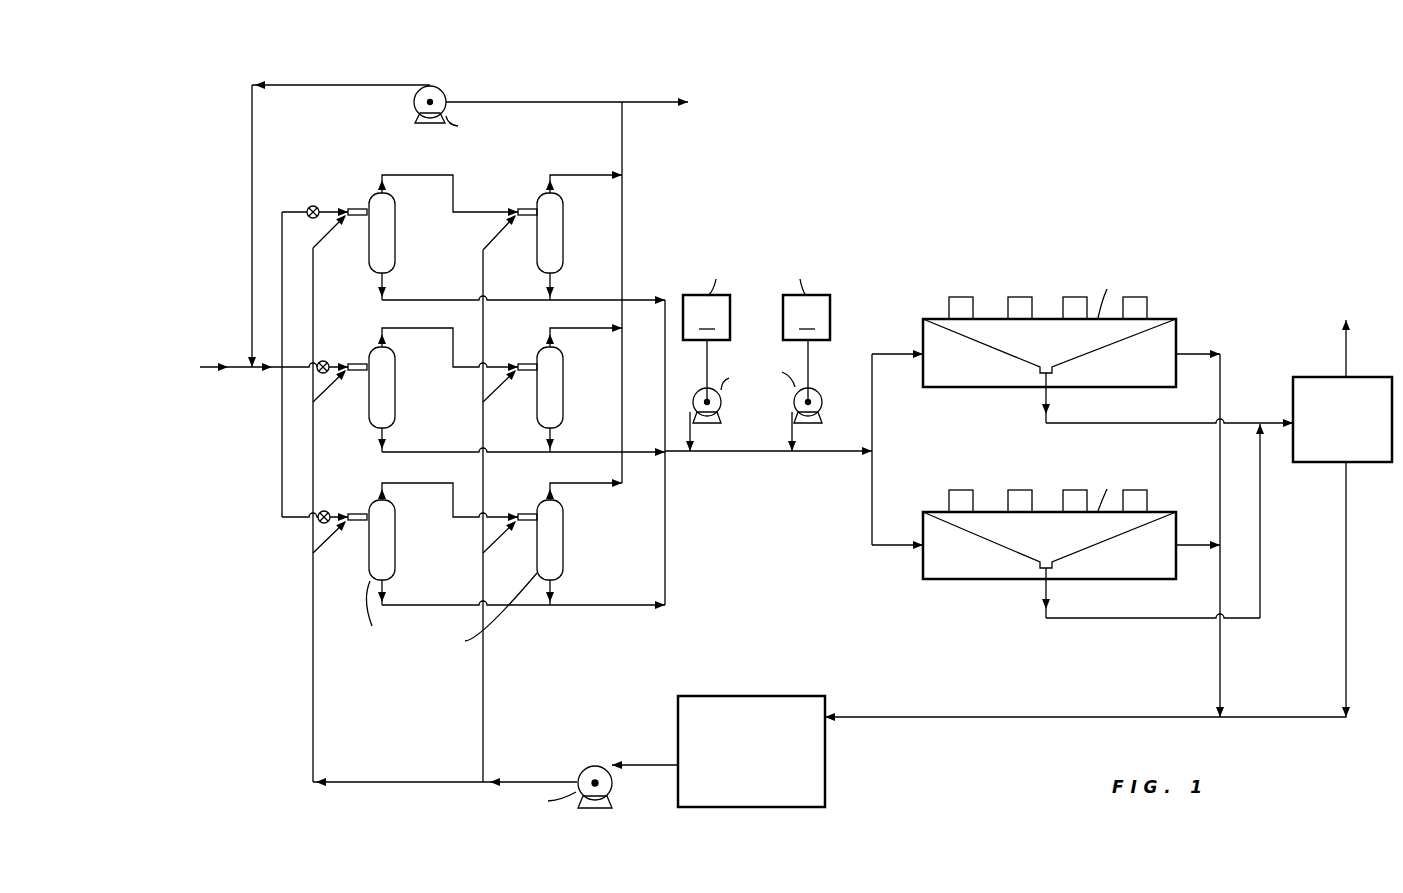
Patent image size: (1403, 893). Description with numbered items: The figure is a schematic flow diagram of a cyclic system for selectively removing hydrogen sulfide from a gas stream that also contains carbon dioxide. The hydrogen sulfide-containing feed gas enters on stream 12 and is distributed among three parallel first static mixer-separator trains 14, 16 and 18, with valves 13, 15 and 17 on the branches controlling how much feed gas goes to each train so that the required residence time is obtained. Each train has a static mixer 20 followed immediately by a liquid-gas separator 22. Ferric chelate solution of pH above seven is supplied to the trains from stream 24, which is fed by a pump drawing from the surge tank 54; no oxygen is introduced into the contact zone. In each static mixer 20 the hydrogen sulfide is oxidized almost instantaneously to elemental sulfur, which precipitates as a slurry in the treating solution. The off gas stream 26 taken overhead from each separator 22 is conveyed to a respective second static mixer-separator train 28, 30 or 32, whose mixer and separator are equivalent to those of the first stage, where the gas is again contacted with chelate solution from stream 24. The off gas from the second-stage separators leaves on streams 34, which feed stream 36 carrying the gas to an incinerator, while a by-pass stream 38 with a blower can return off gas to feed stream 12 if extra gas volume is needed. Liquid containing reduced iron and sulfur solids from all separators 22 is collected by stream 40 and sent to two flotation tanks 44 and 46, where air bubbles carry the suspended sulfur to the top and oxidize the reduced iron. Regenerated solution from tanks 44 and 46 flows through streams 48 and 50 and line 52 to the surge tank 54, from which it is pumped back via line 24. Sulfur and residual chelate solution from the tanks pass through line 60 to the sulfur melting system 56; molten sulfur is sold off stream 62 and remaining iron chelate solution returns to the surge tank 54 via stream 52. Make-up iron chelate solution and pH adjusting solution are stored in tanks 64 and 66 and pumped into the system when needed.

The feed gas stream 12 is at (215, 358).
The valve 13 is at (309, 206).
The first static mixer-separator train 14 is at (329, 186).
The valve 15 is at (319, 362).
The first static mixer-separator train 16 is at (356, 345).
The valve 17 is at (320, 512).
The first static mixer-separator train 18 is at (361, 490).
The static mixer 20 is at (353, 206).
The liquid-gas separator 22 is at (395, 253).
The chelate solution stream 24 is at (550, 779).
The off gas stream 26 is at (430, 175).
The second static mixer-separator train 28 is at (526, 194).
The second static mixer-separator train 30 is at (529, 348).
The second static mixer-separator train 32 is at (529, 499).
The off gas stream 34 is at (594, 170).
The incinerator stream 36 is at (649, 100).
The by-pass stream 38 is at (313, 86).
The liquid stream 40 is at (638, 296).
The flotation tank 44 is at (1172, 310).
The flotation tank 46 is at (1170, 503).
The regenerated solution stream 48 is at (1222, 391).
The regenerated solution stream 50 is at (1261, 552).
The surge tank line 52 is at (1031, 721).
The surge tank 54 is at (830, 763).
The sulfur melting system 56 is at (1313, 463).
The sulfur line 60 is at (1098, 620).
The molten sulfur stream 62 is at (1344, 345).
The make-up tank 64 is at (742, 354).
The make-up tank 66 is at (806, 365).